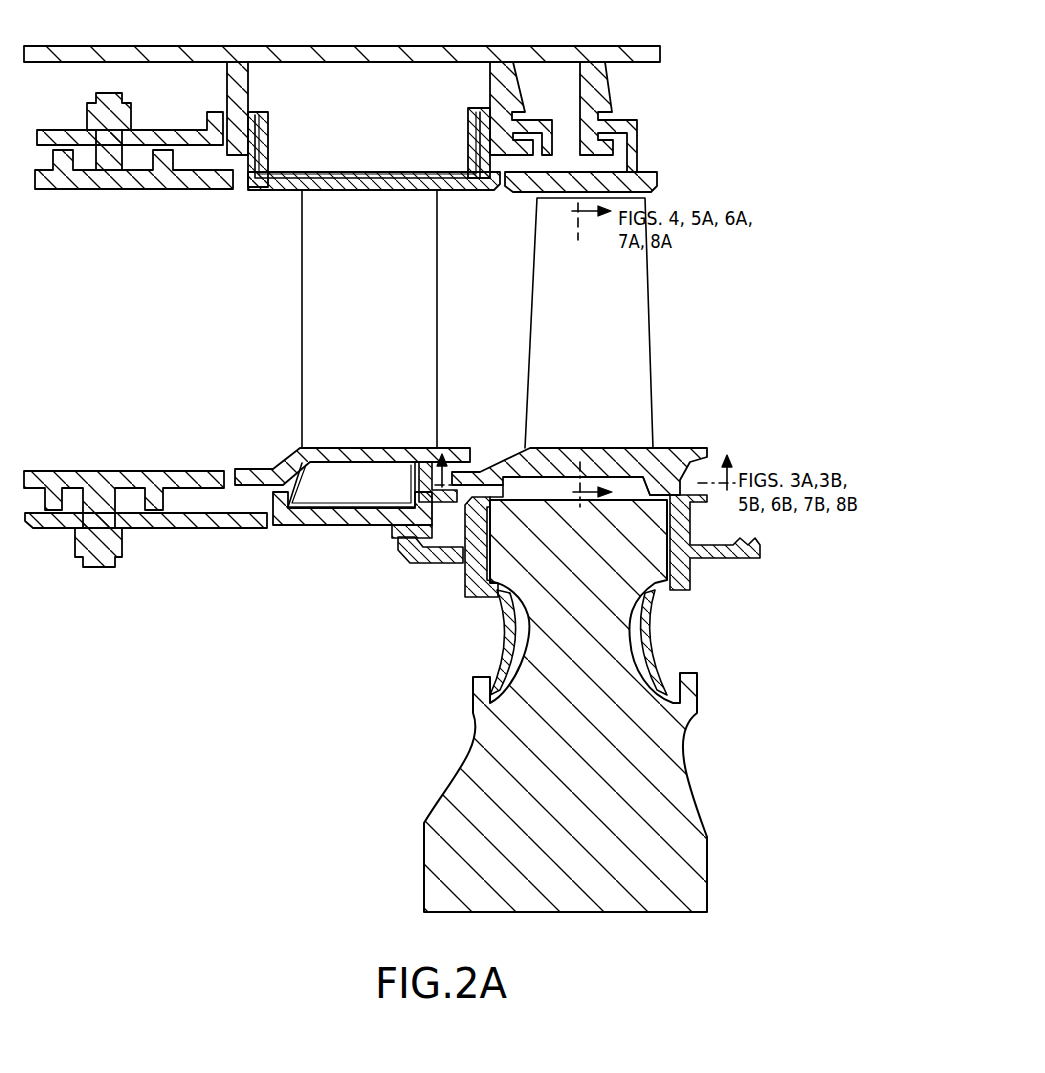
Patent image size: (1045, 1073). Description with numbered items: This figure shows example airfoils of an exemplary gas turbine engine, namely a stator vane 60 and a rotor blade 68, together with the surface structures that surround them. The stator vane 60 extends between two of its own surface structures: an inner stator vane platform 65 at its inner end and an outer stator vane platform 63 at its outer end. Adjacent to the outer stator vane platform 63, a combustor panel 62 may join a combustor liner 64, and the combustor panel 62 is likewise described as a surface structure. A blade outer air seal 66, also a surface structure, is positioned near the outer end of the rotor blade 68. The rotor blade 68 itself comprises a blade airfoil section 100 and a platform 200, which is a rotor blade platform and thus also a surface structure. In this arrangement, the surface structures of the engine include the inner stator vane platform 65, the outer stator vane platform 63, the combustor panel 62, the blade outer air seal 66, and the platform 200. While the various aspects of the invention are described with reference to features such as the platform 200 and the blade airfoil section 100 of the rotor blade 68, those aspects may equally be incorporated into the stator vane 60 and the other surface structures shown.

The stator vane 60 is at (313, 243).
The combustor panel 62 is at (118, 478).
The outer stator vane platform 63 is at (271, 183).
The combustor liner 64 is at (230, 522).
The inner stator vane platform 65 is at (288, 468).
The blade outer air seal (BOAS) 66 is at (660, 182).
The rotor blade 68 is at (755, 370).
The blade airfoil section 100 is at (645, 383).
The platform 200 is at (680, 452).